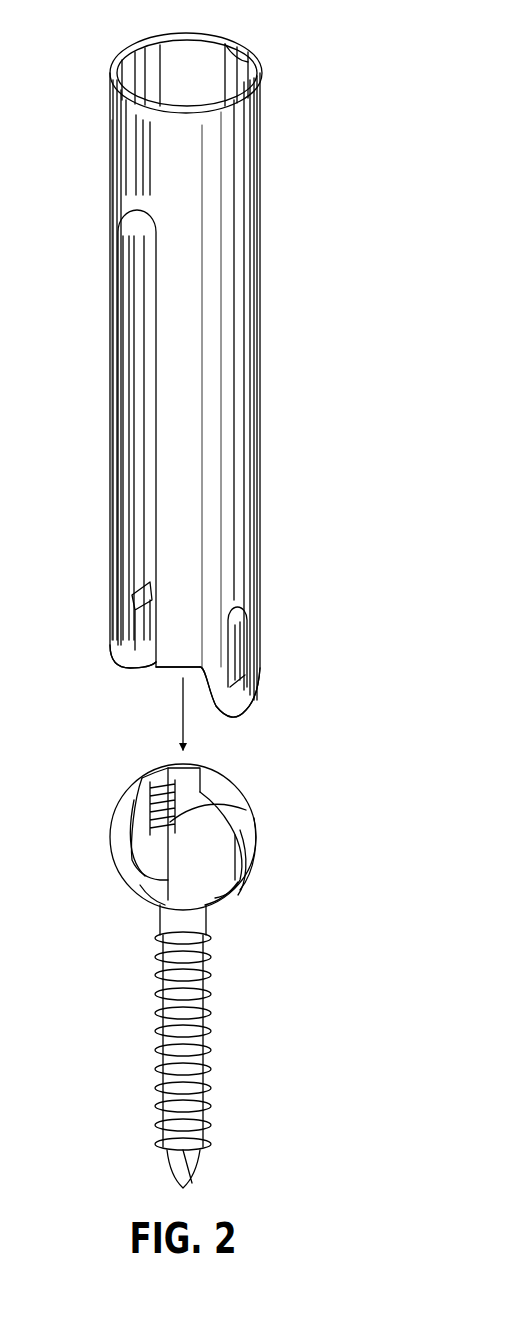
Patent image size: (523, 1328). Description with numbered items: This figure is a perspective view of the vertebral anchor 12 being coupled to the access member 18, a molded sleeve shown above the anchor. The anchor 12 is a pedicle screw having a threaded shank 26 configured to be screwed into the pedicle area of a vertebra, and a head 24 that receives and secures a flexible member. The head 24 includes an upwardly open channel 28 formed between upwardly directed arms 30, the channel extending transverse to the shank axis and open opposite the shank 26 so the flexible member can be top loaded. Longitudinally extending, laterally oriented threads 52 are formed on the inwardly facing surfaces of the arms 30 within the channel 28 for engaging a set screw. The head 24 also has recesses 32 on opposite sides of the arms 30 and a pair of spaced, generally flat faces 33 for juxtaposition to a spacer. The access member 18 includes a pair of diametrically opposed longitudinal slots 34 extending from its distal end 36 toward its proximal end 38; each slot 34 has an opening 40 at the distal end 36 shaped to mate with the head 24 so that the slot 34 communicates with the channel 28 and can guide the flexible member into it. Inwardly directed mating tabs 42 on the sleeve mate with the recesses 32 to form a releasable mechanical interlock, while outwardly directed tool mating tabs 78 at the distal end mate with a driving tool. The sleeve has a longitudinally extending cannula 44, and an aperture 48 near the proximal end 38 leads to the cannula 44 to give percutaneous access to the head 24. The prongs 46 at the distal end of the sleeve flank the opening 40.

The anchor 12 is at (57, 806).
The access member 18 is at (57, 178).
The head 24 is at (262, 838).
The threaded shank 26 is at (158, 1018).
The channel 28 is at (212, 788).
The arms 30 is at (134, 800).
The recesses 32 is at (238, 882).
The flat faces 33 is at (140, 885).
The longitudinal slots 34 is at (156, 355).
The distal end 36 is at (110, 605).
The proximal end 38 is at (110, 92).
The opening 40 is at (150, 672).
The mating tabs 42 is at (138, 665).
The cannula 44 is at (176, 50).
The prongs 46 is at (118, 648).
The aperture 48 is at (226, 68).
The threads 52 is at (172, 778).
The tool mating tabs 78 is at (238, 650).